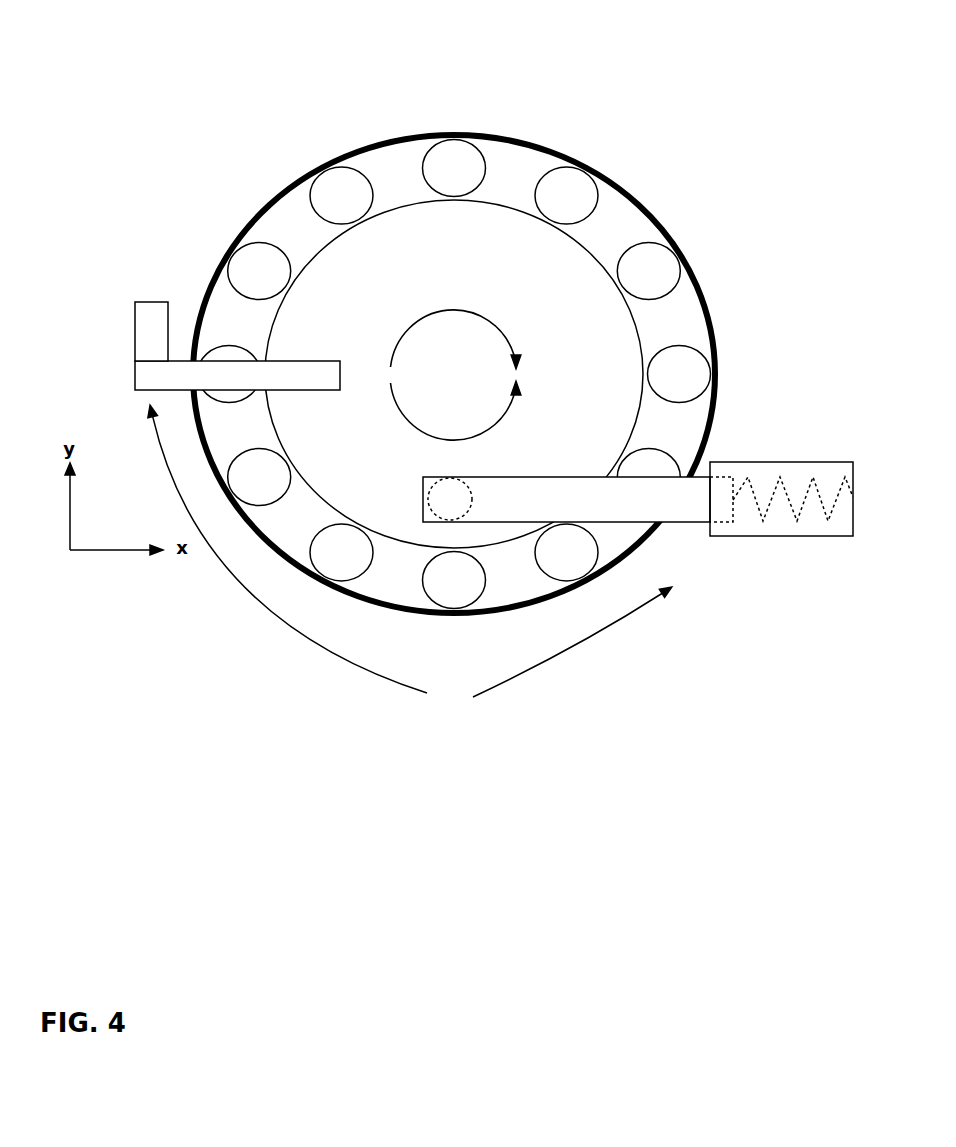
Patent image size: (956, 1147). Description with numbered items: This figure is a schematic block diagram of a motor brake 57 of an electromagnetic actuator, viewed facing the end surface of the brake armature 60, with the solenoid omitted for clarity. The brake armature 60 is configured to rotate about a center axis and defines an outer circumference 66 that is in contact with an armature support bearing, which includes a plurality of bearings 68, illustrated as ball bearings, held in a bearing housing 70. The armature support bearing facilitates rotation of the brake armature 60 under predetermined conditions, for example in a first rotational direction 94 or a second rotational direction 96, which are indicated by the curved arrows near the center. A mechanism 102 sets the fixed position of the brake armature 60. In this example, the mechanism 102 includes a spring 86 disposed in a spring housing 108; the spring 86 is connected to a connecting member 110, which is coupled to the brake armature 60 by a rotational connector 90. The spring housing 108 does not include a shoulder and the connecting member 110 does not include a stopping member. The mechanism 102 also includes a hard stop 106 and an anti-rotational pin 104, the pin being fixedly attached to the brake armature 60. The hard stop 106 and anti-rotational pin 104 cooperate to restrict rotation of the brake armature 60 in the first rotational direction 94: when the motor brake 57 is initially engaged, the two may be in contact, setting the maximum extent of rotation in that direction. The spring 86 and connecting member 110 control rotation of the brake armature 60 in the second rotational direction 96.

The motor brake 57 is at (430, 313).
The brake armature 60 is at (327, 268).
The outer circumference 66 is at (393, 200).
The bearings 68 is at (467, 162).
The bearing housing 70 is at (653, 215).
The spring 86 is at (770, 503).
The rotational connector 90 is at (462, 481).
The first rotational direction 94 is at (498, 320).
The second rotational direction 96 is at (506, 405).
The mechanism 102 is at (410, 561).
The anti-rotational pin 104 is at (145, 378).
The hard stop 106 is at (150, 321).
The spring housing 108 is at (777, 463).
The connecting member 110 is at (677, 505).